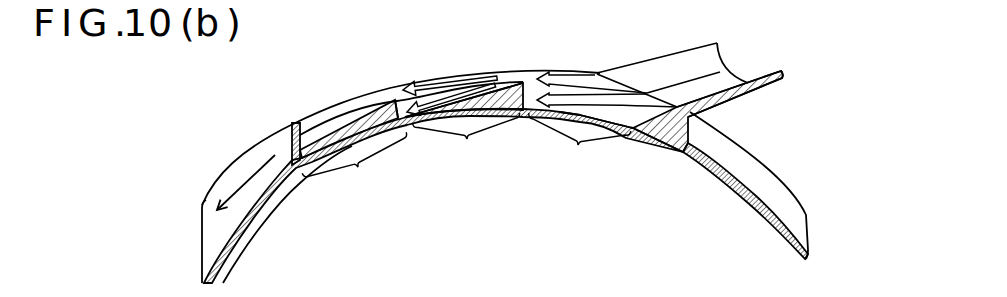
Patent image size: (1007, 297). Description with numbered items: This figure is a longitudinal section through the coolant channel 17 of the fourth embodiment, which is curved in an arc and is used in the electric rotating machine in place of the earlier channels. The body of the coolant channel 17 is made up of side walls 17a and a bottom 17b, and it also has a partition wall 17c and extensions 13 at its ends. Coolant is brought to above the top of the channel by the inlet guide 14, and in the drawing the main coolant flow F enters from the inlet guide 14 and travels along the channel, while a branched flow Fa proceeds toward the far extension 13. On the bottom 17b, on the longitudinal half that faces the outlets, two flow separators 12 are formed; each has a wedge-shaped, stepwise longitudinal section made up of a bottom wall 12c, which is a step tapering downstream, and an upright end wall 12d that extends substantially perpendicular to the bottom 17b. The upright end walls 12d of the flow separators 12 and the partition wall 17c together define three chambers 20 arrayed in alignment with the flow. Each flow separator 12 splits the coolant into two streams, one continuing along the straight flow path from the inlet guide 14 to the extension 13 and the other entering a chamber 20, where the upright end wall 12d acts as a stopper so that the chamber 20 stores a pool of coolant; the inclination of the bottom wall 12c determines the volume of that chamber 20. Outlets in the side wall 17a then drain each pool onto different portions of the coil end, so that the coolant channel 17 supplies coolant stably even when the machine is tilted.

The flow separator 12 is at (541, 102).
The bottom wall 12c is at (437, 108).
The upright end wall 12d is at (398, 100).
The extension 13 is at (296, 178).
The inlet guide 14 is at (765, 88).
The coolant channel 17 is at (401, 129).
The side wall 17a is at (338, 102).
The bottom 17b is at (317, 127).
The partition wall 17c is at (291, 138).
The chamber 20 is at (466, 153).
The air flow F is at (682, 82).
The branched air flow Fa is at (237, 190).